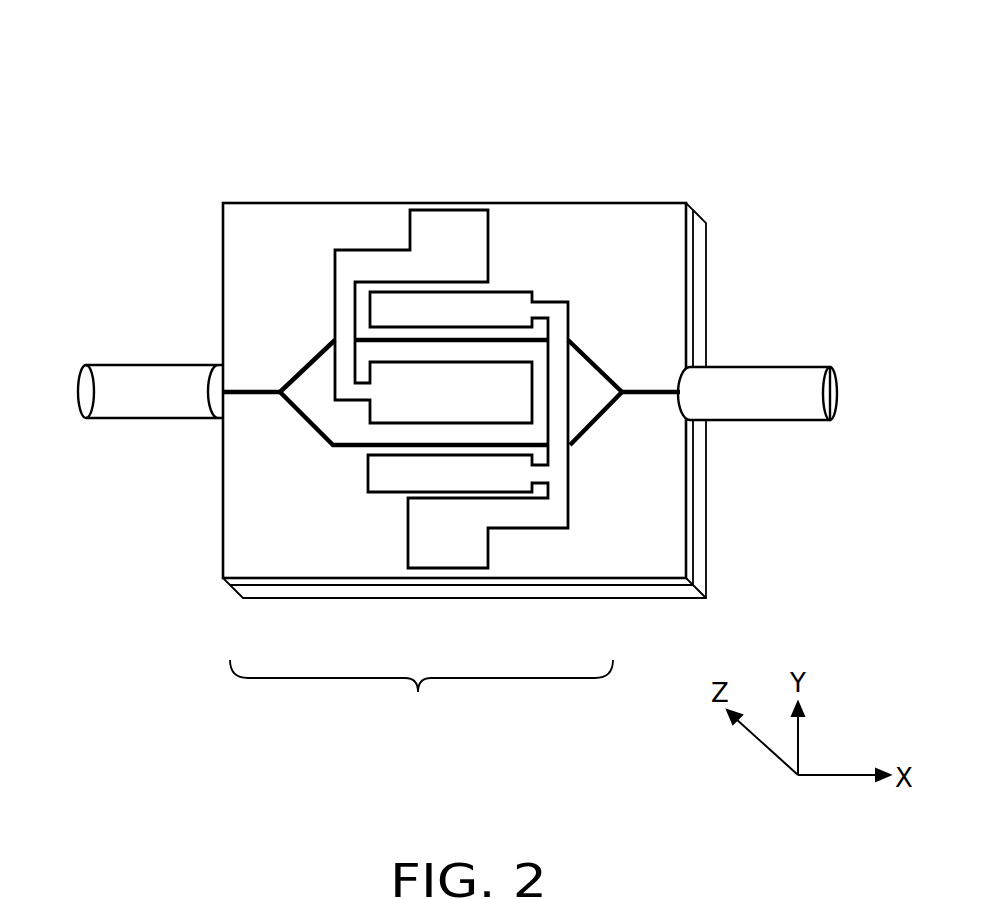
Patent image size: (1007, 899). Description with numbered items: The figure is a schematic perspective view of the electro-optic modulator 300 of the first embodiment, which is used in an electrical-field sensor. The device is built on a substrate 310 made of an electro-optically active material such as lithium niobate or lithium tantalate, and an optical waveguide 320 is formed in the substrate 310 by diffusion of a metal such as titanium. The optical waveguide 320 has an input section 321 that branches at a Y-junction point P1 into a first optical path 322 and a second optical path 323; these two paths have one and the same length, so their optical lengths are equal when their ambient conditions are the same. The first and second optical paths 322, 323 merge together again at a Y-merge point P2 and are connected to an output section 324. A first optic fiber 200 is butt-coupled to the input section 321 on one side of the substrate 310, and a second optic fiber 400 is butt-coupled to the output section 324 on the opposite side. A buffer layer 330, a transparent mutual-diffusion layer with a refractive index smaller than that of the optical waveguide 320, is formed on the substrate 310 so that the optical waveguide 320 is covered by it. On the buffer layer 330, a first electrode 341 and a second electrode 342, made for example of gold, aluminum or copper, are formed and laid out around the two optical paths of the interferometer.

The electro-optic modulator 300 is at (538, 125).
The substrate 310 is at (698, 557).
The optical waveguide 320 is at (421, 696).
The input section 321 is at (258, 395).
The first optical path 322 is at (390, 340).
The second optical path 323 is at (463, 445).
The output section 324 is at (647, 397).
The buffer layer 330 is at (688, 517).
The first electrode 341 is at (340, 262).
The second electrode 342 is at (565, 305).
The first optic fiber 200 is at (140, 413).
The second optic fiber 400 is at (785, 375).
The Y-junction point P1 is at (278, 390).
The Y-merge point P2 is at (625, 392).